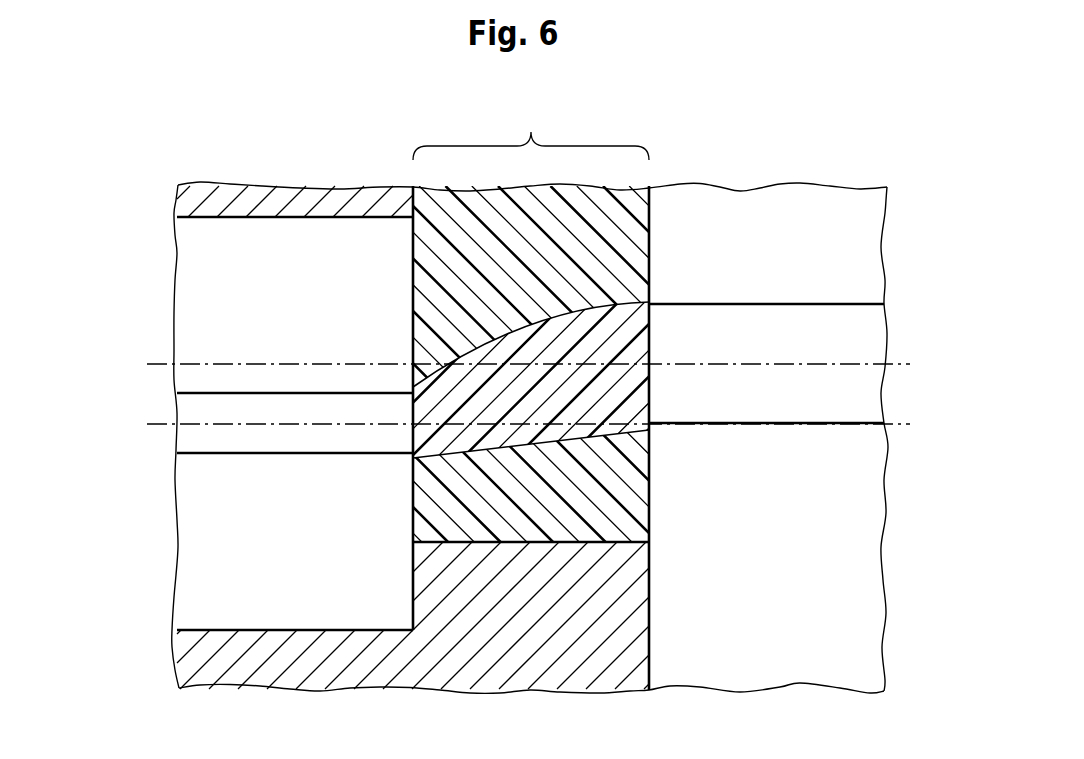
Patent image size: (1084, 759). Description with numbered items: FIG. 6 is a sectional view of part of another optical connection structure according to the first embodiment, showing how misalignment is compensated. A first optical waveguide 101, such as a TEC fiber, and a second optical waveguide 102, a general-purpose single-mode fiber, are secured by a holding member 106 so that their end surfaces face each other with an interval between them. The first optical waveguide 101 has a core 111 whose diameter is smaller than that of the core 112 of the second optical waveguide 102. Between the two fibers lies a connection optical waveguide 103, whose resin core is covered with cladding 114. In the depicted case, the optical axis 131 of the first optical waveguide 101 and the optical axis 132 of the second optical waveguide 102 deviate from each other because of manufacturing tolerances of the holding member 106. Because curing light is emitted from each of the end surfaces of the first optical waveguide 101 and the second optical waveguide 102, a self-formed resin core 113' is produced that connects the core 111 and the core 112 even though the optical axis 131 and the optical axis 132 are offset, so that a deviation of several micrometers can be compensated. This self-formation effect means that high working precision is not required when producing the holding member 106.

The first optical waveguide 101 is at (267, 617).
The second optical waveguide 102 is at (814, 680).
The connection optical waveguide 103 is at (531, 133).
The holding member 106 is at (180, 665).
The core 111 is at (328, 443).
The core 112 is at (711, 398).
The resin core 113' is at (531, 521).
The cladding 114 is at (616, 197).
The optical axis 131 is at (147, 424).
The optical axis 132 is at (147, 364).